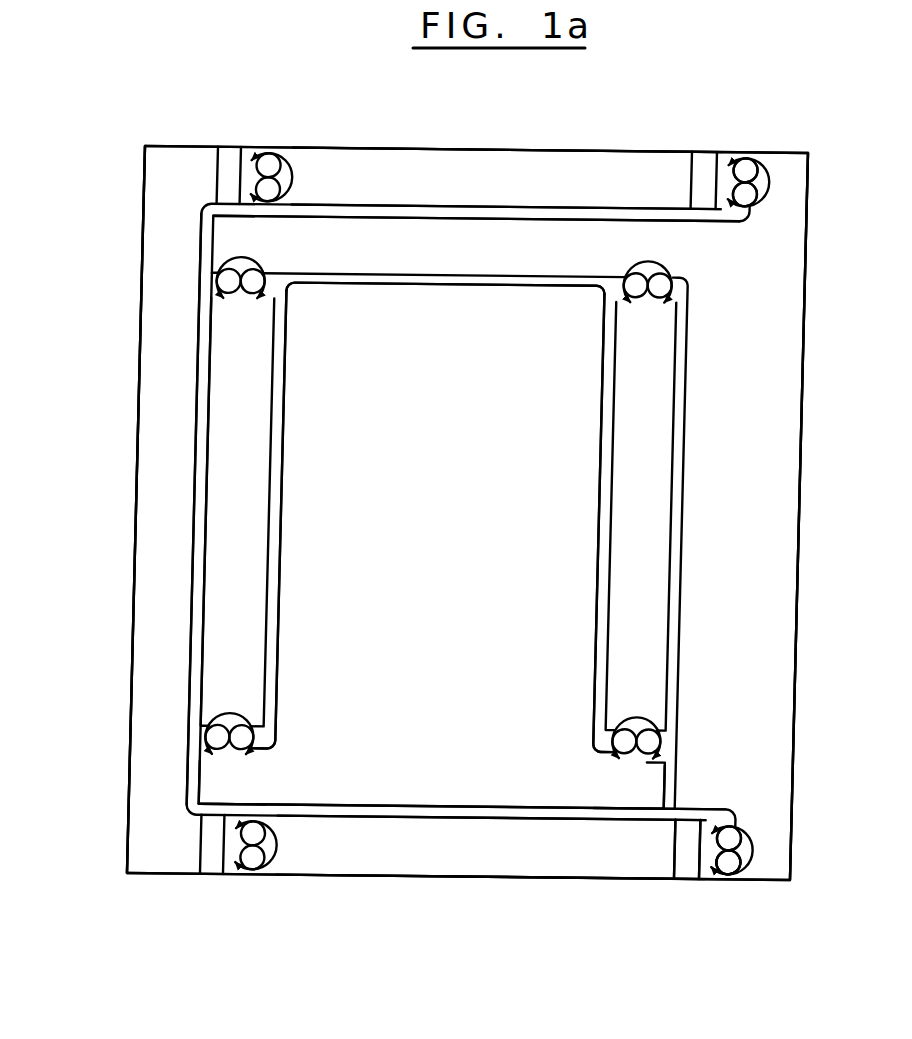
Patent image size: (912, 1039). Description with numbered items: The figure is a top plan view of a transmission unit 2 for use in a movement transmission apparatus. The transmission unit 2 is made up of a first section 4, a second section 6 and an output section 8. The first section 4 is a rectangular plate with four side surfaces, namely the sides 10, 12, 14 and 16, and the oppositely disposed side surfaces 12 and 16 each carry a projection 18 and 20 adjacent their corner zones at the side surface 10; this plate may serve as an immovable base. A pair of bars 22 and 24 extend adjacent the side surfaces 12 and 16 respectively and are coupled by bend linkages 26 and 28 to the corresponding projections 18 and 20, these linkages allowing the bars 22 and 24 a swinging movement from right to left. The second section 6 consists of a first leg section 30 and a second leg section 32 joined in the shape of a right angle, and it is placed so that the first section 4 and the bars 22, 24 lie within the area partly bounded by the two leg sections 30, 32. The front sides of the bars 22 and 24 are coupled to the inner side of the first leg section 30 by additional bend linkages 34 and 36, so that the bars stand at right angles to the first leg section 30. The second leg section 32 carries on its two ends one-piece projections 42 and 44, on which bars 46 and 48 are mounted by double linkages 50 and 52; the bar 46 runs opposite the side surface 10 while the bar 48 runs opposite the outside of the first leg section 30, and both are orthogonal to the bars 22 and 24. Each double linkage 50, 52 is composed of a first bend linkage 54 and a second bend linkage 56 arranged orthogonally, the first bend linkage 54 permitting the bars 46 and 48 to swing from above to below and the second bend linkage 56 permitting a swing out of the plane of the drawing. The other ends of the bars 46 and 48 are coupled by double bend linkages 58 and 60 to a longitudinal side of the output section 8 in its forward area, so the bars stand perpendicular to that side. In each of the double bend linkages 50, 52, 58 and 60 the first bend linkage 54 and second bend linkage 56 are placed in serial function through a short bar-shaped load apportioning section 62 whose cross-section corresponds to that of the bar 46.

The transmission unit 2 is at (82, 435).
The first section 4 is at (438, 517).
The second section 6 is at (808, 326).
The output section 8 is at (165, 510).
The side surface 10 is at (428, 800).
The side surface 12 is at (285, 510).
The side surface 14 is at (418, 284).
The side surface 16 is at (597, 508).
The projection 18 is at (233, 783).
The projection 20 is at (629, 785).
The bar 22 is at (238, 512).
The bar 24 is at (640, 555).
The bend linkage 26 is at (200, 732).
The bend linkage 28 is at (665, 742).
The first leg section 30 is at (475, 247).
The second leg section 32 is at (733, 516).
The bend linkage 34 is at (208, 281).
The bend linkage 36 is at (684, 285).
The projection 42 is at (753, 849).
The projection 44 is at (768, 182).
The bar 46 is at (490, 848).
The bar 48 is at (507, 179).
The double linkage 50 is at (702, 883).
The double linkage 52 is at (727, 145).
The first bend linkage 54 is at (718, 852).
The second bend linkage 56 is at (685, 862).
The double bend linkage 58 is at (237, 881).
The double bend linkage 60 is at (247, 140).
The load apportioning section 62 is at (700, 843).